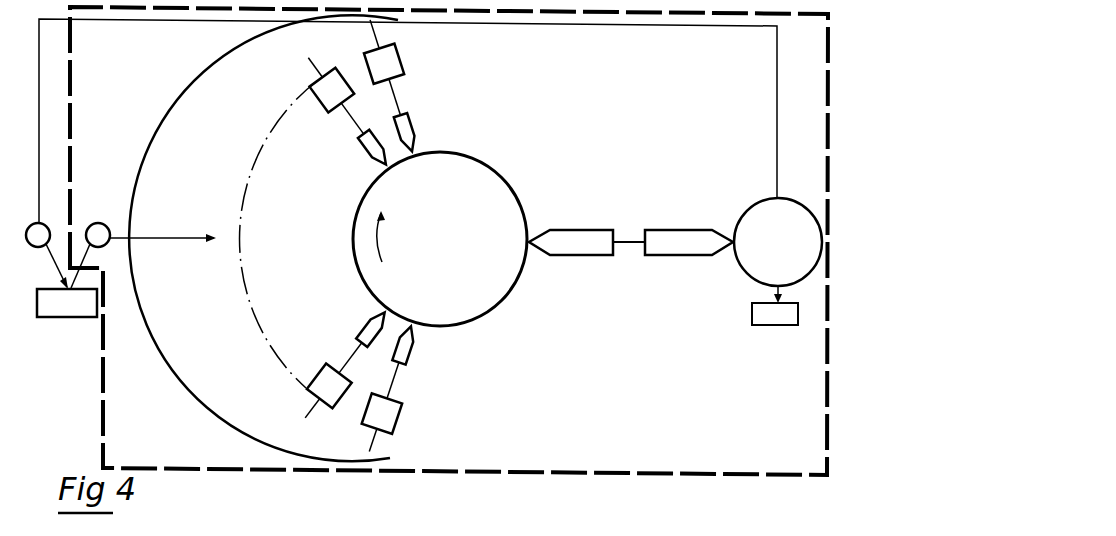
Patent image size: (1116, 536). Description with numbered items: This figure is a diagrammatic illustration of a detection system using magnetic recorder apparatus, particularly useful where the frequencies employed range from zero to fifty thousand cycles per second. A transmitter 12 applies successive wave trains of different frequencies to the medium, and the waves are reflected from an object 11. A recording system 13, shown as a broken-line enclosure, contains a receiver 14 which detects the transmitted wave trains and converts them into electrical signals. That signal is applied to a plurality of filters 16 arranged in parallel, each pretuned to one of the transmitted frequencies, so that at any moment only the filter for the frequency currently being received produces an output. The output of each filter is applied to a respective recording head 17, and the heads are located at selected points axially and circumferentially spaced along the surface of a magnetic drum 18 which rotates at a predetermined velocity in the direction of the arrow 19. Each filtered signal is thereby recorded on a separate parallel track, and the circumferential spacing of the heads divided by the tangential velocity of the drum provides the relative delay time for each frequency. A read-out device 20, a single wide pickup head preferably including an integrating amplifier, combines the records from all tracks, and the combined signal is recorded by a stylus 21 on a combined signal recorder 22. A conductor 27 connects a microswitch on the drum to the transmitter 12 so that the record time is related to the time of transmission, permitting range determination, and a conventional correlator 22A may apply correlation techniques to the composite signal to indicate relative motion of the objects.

The object 11 is at (60, 318).
The transmitter 12 is at (41, 223).
The recording system 13 is at (452, 476).
The receiver 14 is at (104, 223).
The filters 16 is at (400, 57).
The recording heads 17 is at (412, 124).
The magnetic drum 18 is at (498, 305).
The arrow 19 is at (378, 233).
The read-out device 20 is at (588, 230).
The stylus 21 is at (682, 230).
The combined signal recorder 22 is at (782, 197).
The correlator 22A is at (775, 314).
The conductor 27 is at (787, 111).